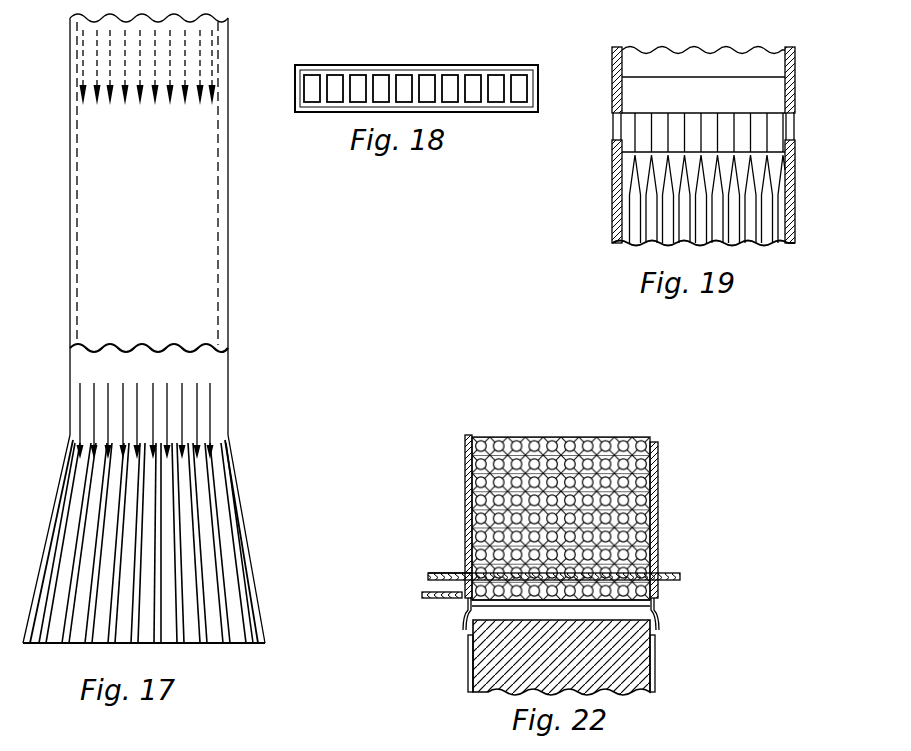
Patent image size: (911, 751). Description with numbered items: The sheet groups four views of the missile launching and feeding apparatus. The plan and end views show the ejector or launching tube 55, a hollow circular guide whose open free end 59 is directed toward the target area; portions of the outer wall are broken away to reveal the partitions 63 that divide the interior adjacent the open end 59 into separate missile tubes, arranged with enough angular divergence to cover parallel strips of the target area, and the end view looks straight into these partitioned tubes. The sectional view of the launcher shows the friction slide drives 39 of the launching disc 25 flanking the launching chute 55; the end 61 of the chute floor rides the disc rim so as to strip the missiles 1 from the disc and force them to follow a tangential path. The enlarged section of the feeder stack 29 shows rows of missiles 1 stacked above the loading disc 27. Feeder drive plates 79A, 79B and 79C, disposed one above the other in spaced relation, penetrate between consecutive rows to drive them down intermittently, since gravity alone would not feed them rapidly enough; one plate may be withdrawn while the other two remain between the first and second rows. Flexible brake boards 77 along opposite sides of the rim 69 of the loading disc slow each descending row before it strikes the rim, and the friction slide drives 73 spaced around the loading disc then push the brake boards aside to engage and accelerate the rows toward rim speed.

In FIG. 17, the filament strip element 1 is at (92, 410).
In FIG. 19, the filament strip element 1 is at (740, 122).
In FIG. 22, the filament strip element 1 is at (500, 438).
In FIG. 19, the upper web 25 is at (745, 58).
In FIG. 22, the base block 27 is at (490, 675).
In FIG. 22, the feeder stack 29 is at (465, 470).
In FIG. 19, the friction slide drives 39 is at (611, 62).
In FIG. 17, the launching chute 55 is at (150, 250).
In FIG. 19, the launching chute 55 is at (612, 148).
In FIG. 17, the open free end 59 is at (210, 645).
In FIG. 19, the end of the floor of the launching tube 61 is at (684, 76).
In FIG. 17, the partitions 63 is at (78, 645).
In FIG. 18, the partitions 63 is at (465, 78).
In FIG. 22, the rim of the loading disc 69 is at (625, 619).
In FIG. 22, the friction slide drives 73 is at (468, 662).
In FIG. 22, the flexible brake boards 77 is at (463, 617).
In FIG. 22, the feeder drive plate 79A is at (422, 594).
In FIG. 22, the feeder drive plate 79B is at (672, 572).
In FIG. 22, the feeder drive plate 79C is at (438, 572).